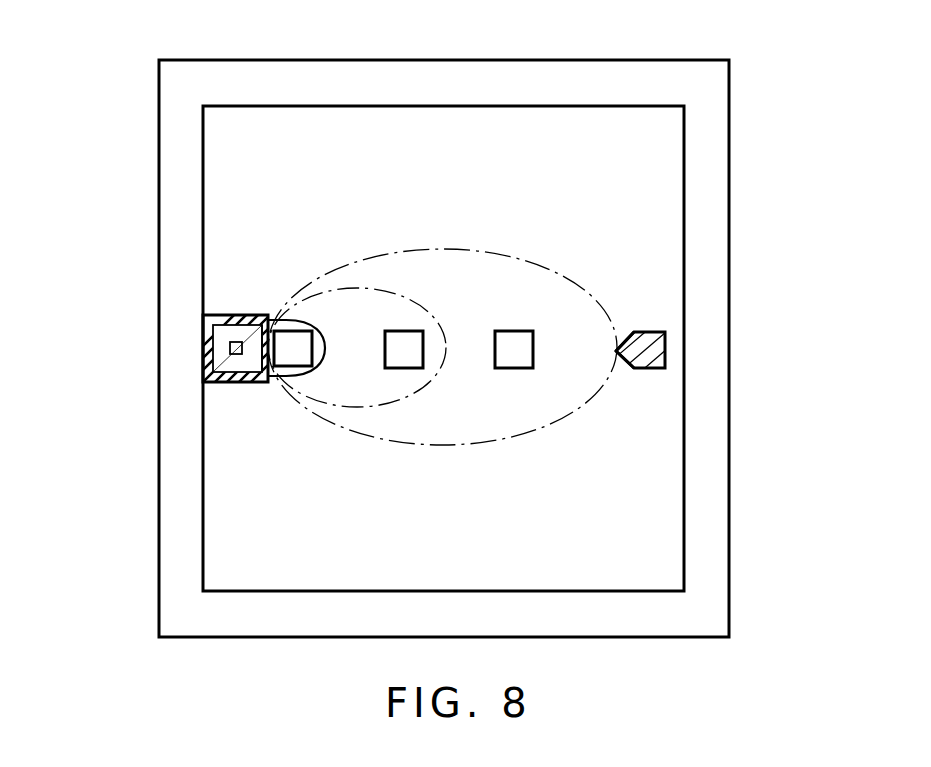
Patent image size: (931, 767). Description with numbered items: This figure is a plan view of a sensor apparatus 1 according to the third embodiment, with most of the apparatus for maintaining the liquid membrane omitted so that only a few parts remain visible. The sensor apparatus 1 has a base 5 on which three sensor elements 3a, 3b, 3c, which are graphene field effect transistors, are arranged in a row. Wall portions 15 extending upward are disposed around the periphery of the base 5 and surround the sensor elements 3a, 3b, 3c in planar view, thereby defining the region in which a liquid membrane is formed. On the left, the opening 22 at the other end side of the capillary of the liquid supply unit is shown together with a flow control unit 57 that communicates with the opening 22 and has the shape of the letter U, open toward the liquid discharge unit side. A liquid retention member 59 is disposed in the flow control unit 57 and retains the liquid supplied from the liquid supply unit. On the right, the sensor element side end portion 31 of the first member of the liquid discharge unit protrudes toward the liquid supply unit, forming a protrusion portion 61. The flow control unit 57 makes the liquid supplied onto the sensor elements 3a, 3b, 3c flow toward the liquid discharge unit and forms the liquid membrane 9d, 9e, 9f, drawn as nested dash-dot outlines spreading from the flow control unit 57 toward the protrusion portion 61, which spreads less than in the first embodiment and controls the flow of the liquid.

The sensor apparatus 1 is at (138, 104).
The base 5 is at (730, 540).
The wall portions 15 is at (170, 277).
The opening 22 is at (229, 350).
The flow control unit 57 is at (210, 383).
The liquid retention member 59 is at (258, 363).
The liquid membrane 9d is at (290, 320).
The liquid membrane 9e is at (343, 290).
The liquid membrane 9f is at (532, 262).
The sensor element 3a is at (290, 377).
The sensor element 3b is at (404, 368).
The sensor element 3c is at (513, 368).
The sensor element side end portion 31 is at (655, 332).
The protrusion portion 61 is at (617, 352).